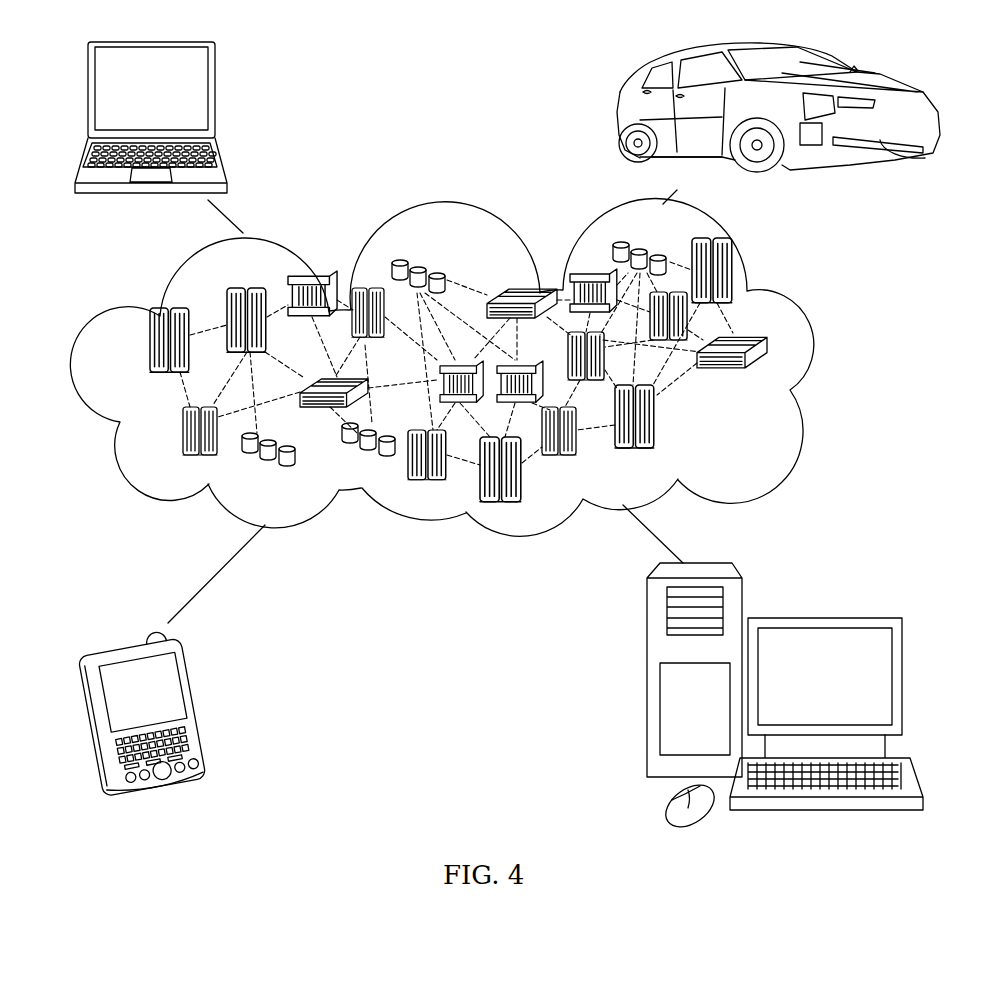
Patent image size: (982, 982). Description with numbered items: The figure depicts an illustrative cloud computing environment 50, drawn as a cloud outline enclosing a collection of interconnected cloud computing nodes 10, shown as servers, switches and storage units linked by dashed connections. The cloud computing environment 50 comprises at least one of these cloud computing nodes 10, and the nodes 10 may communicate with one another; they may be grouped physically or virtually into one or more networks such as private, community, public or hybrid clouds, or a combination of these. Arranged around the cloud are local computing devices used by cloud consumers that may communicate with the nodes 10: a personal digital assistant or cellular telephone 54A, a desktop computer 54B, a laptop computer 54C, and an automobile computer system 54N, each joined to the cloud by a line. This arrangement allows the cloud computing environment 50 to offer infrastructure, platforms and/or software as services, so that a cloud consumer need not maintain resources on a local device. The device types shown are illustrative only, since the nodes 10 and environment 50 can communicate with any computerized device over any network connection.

The cloud computing nodes 10 is at (768, 378).
The cloud computing environment 50 is at (823, 350).
The personal digital assistant or cellular telephone 54A is at (203, 707).
The desktop computer 54B is at (822, 618).
The laptop computer 54C is at (217, 97).
The automobile computer system 54N is at (622, 111).